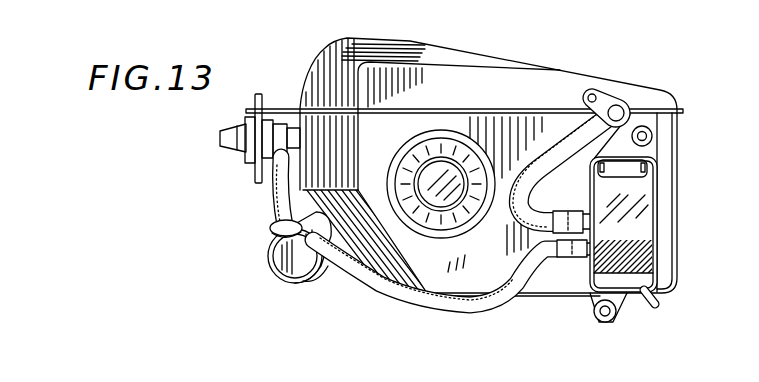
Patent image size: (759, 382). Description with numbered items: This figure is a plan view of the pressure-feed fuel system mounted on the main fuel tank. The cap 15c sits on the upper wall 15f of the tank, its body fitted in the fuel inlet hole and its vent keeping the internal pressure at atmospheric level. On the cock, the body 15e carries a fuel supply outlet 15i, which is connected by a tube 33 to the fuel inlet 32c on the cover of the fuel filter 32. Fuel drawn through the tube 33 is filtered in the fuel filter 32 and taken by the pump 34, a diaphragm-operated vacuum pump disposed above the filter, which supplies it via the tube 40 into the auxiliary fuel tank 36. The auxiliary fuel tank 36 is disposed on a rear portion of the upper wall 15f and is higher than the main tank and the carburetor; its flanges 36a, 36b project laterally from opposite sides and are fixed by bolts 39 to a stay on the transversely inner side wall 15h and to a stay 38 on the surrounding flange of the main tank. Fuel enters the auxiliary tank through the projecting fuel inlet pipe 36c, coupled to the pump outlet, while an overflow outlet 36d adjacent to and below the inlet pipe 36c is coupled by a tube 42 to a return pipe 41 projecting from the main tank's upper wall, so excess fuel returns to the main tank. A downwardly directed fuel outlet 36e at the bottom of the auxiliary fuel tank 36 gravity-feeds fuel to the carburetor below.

The cap 15c is at (452, 150).
The body of the cock 15e is at (268, 122).
The upper wall of the fuel tank 15f is at (520, 133).
The transversely inner side wall of the main fuel tank 15h is at (523, 295).
The fuel supply outlet 15i is at (267, 182).
The fuel filter 32 is at (280, 278).
The fuel inlet 32c is at (262, 228).
The tube 33 is at (263, 203).
The pump 34 is at (317, 277).
The auxiliary fuel tank 36 is at (633, 210).
The flange 36a is at (630, 310).
The flange 36b is at (643, 155).
The fuel inlet pipe 36c is at (574, 258).
The overflow outlet 36d is at (570, 199).
The fuel outlet 36e is at (657, 293).
The stay 38 is at (650, 122).
The bolts 39 is at (653, 136).
The tube 40 is at (447, 307).
The return pipe 41 is at (610, 103).
The tube 42 is at (520, 205).